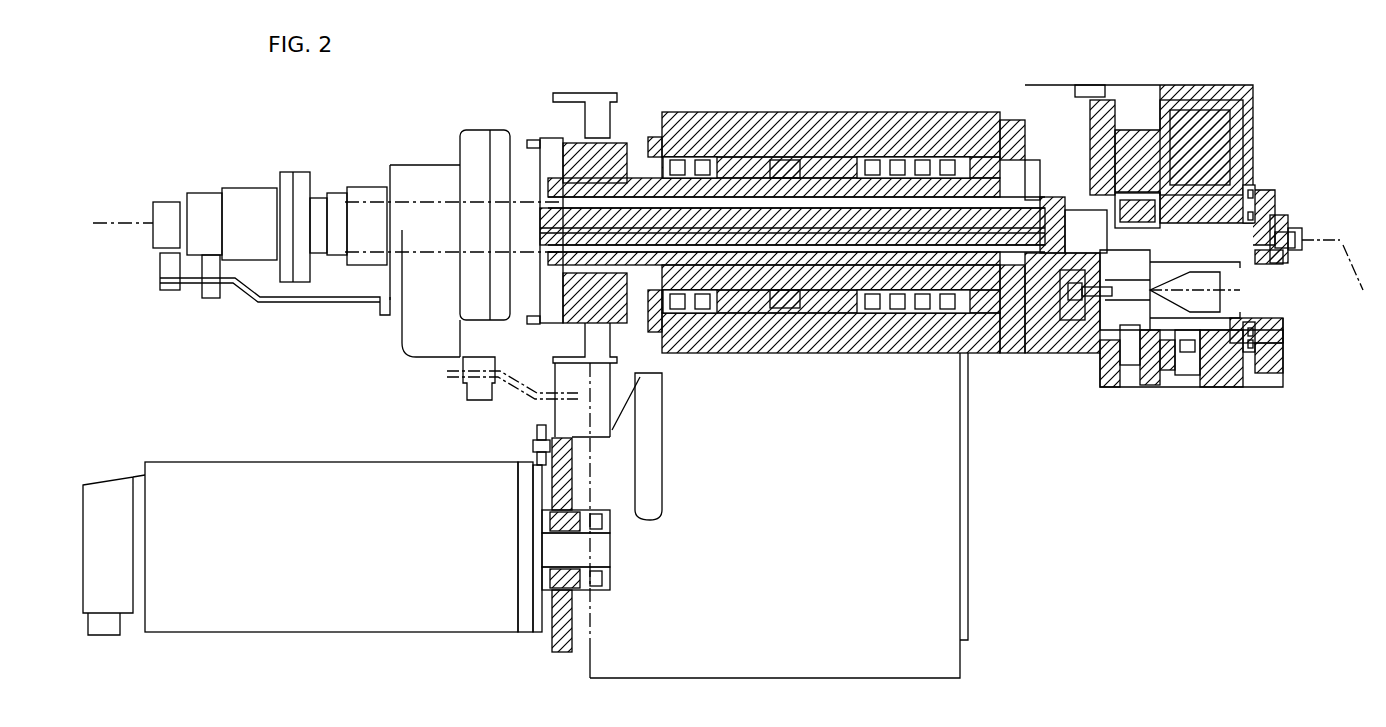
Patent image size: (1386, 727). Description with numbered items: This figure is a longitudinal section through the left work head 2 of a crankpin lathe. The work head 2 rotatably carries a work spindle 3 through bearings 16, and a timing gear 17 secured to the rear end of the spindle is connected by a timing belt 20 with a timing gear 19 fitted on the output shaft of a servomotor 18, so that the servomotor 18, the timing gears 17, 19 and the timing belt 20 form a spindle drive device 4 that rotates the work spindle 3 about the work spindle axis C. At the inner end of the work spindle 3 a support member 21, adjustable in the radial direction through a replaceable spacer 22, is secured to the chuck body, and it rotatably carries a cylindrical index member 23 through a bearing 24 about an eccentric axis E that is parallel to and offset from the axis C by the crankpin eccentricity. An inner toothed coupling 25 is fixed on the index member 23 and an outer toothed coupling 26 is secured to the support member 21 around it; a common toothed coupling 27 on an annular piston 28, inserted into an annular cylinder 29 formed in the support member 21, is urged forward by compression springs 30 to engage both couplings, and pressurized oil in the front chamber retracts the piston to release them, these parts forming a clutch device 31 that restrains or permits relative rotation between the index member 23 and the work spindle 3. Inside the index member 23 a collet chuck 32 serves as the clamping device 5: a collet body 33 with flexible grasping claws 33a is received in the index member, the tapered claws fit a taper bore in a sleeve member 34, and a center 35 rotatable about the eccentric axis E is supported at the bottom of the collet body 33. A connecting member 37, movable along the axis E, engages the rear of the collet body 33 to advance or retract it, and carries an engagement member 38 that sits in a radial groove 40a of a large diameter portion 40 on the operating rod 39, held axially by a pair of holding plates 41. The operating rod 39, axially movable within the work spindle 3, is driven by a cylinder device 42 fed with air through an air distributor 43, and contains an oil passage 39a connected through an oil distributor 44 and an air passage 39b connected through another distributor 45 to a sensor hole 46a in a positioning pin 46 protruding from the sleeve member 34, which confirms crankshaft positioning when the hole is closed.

The work head 2 is at (716, 112).
The work spindle 3 is at (815, 190).
The spindle drive device 4 is at (543, 650).
The clamping device 5 is at (1302, 350).
The bearings 16 is at (683, 157).
The timing gear 17 is at (600, 93).
The servomotor 18 is at (348, 616).
The timing gear 19 is at (640, 530).
The timing belt 20 is at (612, 467).
The support member 21 is at (1225, 175).
The spacer 22 is at (1180, 175).
The index member 23 is at (1270, 205).
The bearing 24 is at (1250, 185).
The inner toothed coupling 25 is at (1205, 352).
The outer toothed coupling 26 is at (1185, 352).
The common toothed coupling 27 is at (1170, 352).
The annular piston 28 is at (1150, 352).
The annular cylinder 29 is at (1140, 352).
The compression springs 30 is at (1125, 217).
The clutch device 31 is at (1118, 352).
The collet chuck 32 is at (1278, 352).
The collet body 33 is at (1245, 280).
The grasping claws 33a is at (1272, 258).
The sleeve member 34 is at (1288, 222).
The center 35 is at (1283, 325).
The connecting member 37 is at (1085, 325).
The engagement member 38 is at (1068, 320).
The operating rod 39 is at (757, 220).
The oil passage 39a is at (818, 268).
The air passage 39b is at (850, 235).
The large diameter portion 40 is at (1075, 130).
The radial groove 40a is at (1060, 150).
The holding plates 41 is at (1100, 150).
The cylinder device 42 is at (478, 135).
The air distributor 43 is at (418, 178).
The oil distributor 44 is at (214, 203).
The distributor 45 is at (172, 203).
The positioning pin 46 is at (1296, 235).
The sensor hole 46a is at (1302, 240).
The eccentric axis E is at (1250, 295).
The work spindle axis C is at (1359, 276).